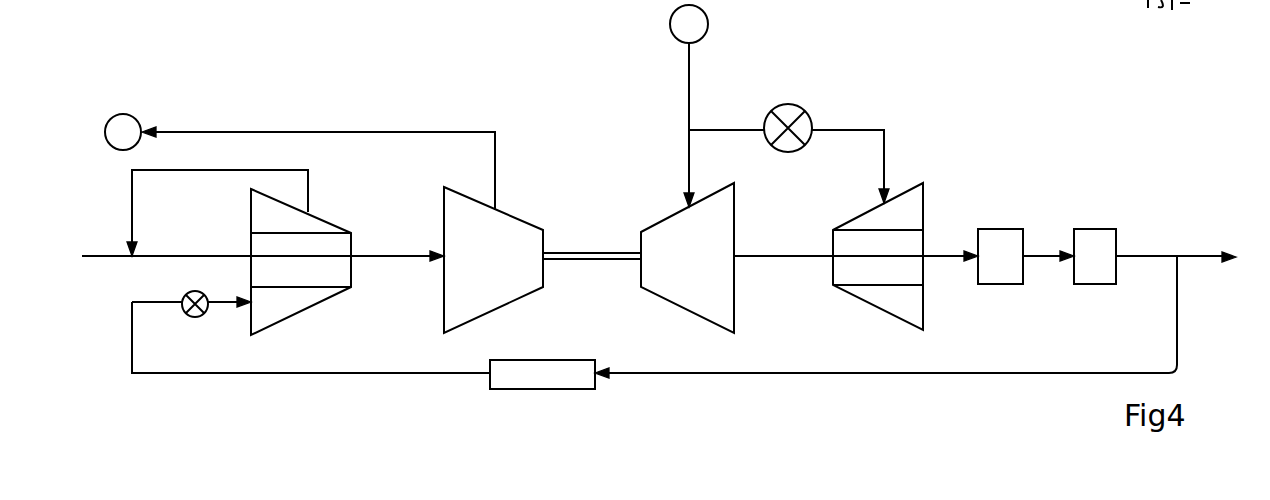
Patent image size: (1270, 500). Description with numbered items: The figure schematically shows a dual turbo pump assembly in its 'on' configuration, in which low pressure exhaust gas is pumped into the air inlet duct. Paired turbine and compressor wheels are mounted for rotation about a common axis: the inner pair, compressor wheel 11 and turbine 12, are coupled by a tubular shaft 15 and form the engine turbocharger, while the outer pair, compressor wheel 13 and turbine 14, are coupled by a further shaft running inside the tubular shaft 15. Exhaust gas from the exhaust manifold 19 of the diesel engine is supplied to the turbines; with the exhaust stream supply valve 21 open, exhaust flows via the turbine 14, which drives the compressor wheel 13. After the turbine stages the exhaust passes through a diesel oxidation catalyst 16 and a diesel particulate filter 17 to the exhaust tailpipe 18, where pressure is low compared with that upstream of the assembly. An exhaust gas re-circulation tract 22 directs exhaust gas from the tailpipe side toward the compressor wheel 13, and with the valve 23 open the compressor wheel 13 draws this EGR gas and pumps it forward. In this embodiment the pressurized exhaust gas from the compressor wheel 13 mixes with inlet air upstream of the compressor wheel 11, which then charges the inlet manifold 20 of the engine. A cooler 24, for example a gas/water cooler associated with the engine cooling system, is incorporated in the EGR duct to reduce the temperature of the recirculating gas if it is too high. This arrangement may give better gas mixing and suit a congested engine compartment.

The compressor wheel 11 is at (527, 222).
The turbine 12 is at (673, 215).
The compressor wheel 13 is at (346, 231).
The turbine 14 is at (913, 190).
The tubular shaft 15 is at (598, 251).
The diesel oxidation catalyst 16 is at (1008, 232).
The diesel particulate filter 17 is at (1099, 232).
The exhaust tailpipe 18 is at (1196, 256).
The exhaust manifold 19 is at (689, 106).
The inlet manifold 20 is at (300, 185).
The exhaust stream supply valve 21 is at (831, 92).
The exhaust gas re-circulation tract 22 is at (863, 373).
The valve 23 is at (186, 295).
The cooler 24 is at (556, 384).